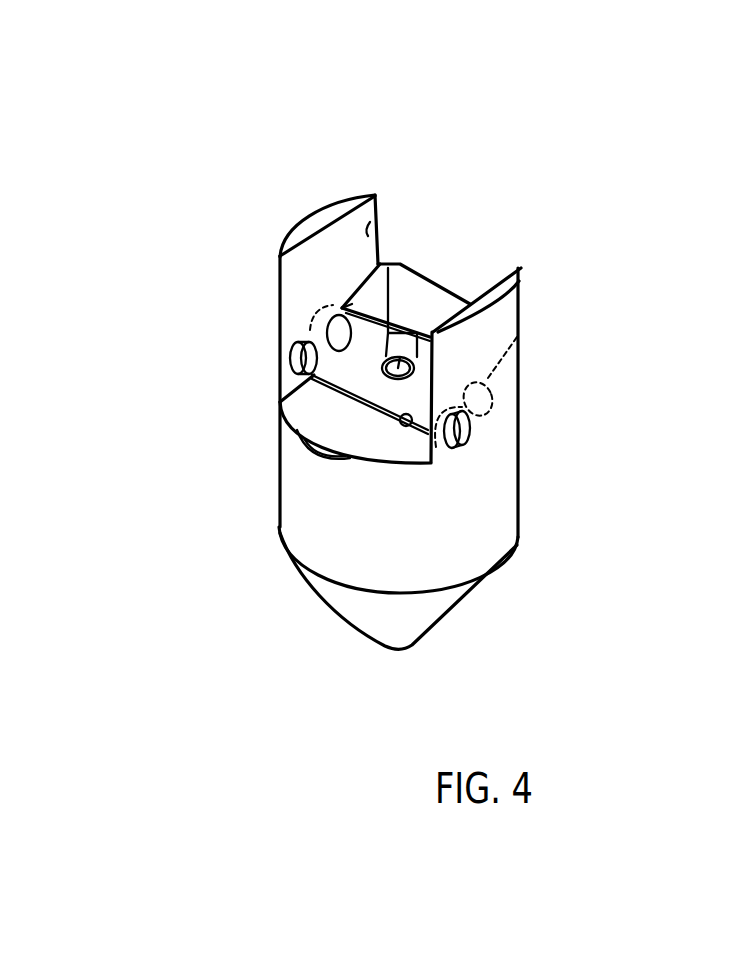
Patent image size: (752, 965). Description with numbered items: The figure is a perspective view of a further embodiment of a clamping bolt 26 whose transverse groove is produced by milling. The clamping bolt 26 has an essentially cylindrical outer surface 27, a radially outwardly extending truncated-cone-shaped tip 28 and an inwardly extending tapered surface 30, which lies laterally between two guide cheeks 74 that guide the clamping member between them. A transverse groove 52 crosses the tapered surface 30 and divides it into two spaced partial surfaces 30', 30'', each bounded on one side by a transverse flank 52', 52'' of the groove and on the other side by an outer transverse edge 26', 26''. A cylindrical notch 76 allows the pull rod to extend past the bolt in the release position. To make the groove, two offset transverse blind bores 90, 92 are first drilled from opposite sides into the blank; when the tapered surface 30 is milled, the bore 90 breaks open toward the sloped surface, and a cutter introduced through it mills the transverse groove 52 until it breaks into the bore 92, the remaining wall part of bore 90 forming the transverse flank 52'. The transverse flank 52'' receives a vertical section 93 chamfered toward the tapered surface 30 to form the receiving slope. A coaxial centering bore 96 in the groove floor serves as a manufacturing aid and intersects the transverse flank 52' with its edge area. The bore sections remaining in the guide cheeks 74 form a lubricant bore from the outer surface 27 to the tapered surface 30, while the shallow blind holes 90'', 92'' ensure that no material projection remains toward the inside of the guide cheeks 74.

The clamping bolt 26 is at (281, 462).
The outer transverse edge 26' is at (496, 307).
The outer transverse edge 26'' is at (269, 518).
The cylindrical outer surface 27 is at (485, 502).
The truncated-cone-shaped tip 28 is at (427, 615).
The tapered surface 30 is at (350, 519).
The partial surface 30' is at (426, 185).
The partial surface 30'' is at (225, 468).
The transverse groove 52 is at (169, 427).
The transverse flank 52' is at (291, 191).
The transverse flank 52'' is at (429, 578).
The guide cheeks 74 is at (379, 262).
The cylindrical notch 76 is at (413, 293).
The transverse blind bore 90 is at (572, 462).
The blind hole 90'' is at (192, 375).
The transverse blind bore 92 is at (215, 313).
The blind hole 92'' is at (553, 387).
The vertical section 93 is at (342, 306).
The centering bore 96 is at (400, 358).